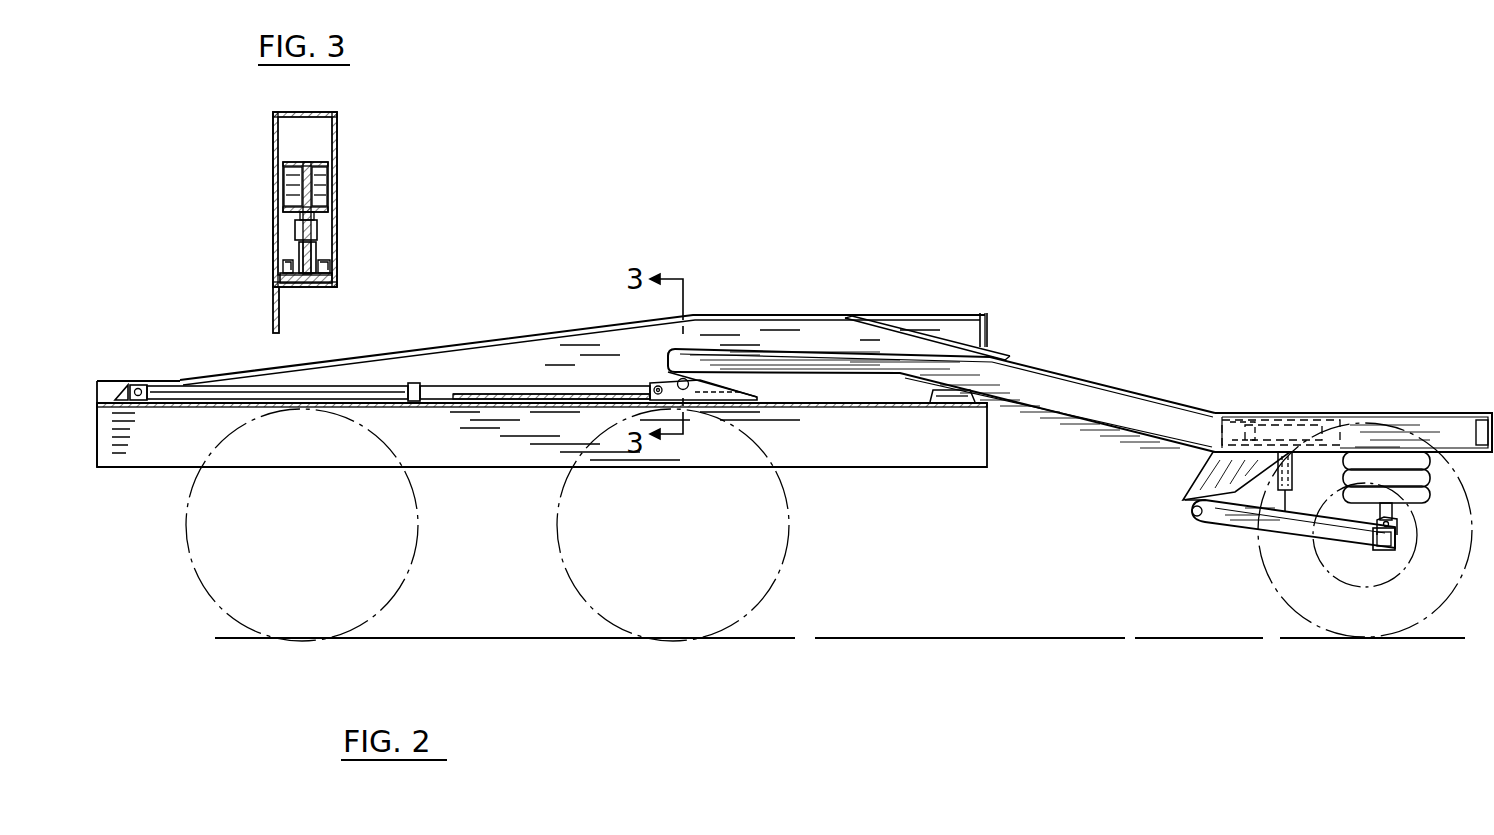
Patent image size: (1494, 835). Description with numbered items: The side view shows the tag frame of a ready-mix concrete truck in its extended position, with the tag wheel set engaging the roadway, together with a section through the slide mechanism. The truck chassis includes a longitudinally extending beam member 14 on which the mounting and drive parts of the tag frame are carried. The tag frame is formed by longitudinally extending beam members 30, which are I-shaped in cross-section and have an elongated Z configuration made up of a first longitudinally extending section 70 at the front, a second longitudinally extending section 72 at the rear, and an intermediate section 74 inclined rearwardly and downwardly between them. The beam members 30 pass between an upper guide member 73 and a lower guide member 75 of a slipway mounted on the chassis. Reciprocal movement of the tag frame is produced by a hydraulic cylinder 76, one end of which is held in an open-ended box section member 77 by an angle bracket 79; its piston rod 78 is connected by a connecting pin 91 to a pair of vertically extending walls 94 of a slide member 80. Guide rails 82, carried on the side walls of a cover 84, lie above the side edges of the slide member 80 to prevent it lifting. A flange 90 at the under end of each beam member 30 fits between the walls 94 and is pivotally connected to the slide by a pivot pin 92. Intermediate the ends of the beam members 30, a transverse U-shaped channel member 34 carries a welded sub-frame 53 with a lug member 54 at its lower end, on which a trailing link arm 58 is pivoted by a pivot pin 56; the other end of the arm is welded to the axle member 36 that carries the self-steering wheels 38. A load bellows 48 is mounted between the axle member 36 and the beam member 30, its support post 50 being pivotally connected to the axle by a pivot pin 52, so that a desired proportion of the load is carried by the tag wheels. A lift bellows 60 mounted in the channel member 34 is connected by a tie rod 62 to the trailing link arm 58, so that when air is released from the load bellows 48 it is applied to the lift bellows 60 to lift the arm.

In FIG. 3, the longitudinally extending beam member 14 is at (273, 316).
In FIG. 2, the longitudinally extending beam member 14 is at (542, 424).
In FIG. 2, the longitudinally extending beam member 30 is at (1080, 357).
In FIG. 2, the transverse U-shaped channel member 34 is at (1245, 415).
In FIG. 2, the axle member 36 is at (1385, 545).
In FIG. 2, the wheel 38 is at (1262, 598).
In FIG. 2, the load bellows 48 is at (1432, 464).
In FIG. 2, the support post 50 is at (1393, 512).
In FIG. 2, the pivot pin 52 is at (1398, 528).
In FIG. 2, the sub-frame 53 is at (1210, 480).
In FIG. 2, the lug member 54 is at (1192, 509).
In FIG. 2, the pivot pin 56 is at (1195, 521).
In FIG. 2, the trailing link arm 58 is at (1232, 525).
In FIG. 2, the lift bellows 60 is at (1280, 430).
In FIG. 2, the tie rod 62 is at (1272, 500).
In FIG. 3, the first longitudinally extending section 70 is at (320, 185).
In FIG. 2, the first longitudinally extending section 70 is at (795, 350).
In FIG. 2, the second longitudinally extending section 72 is at (1390, 412).
In FIG. 2, the upper guide member 73 is at (920, 338).
In FIG. 2, the intermediate section 74 is at (1103, 400).
In FIG. 2, the lower guide member 75 is at (935, 402).
In FIG. 2, the hydraulic cylinder 76 is at (353, 390).
In FIG. 2, the open-ended box section member 77 is at (170, 380).
In FIG. 2, the piston rod 78 is at (470, 388).
In FIG. 2, the angle bracket 79 is at (118, 386).
In FIG. 3, the slide member 80 is at (332, 278).
In FIG. 2, the slide member 80 is at (700, 400).
In FIG. 3, the guide rail 82 is at (325, 262).
In FIG. 3, the cover 84 is at (273, 135).
In FIG. 3, the flange 90 is at (323, 217).
In FIG. 2, the flange 90 is at (672, 380).
In FIG. 2, the connecting pin 91 is at (654, 388).
In FIG. 3, the pivot pin 92 is at (296, 228).
In FIG. 3, the vertically extending wall 94 is at (300, 255).